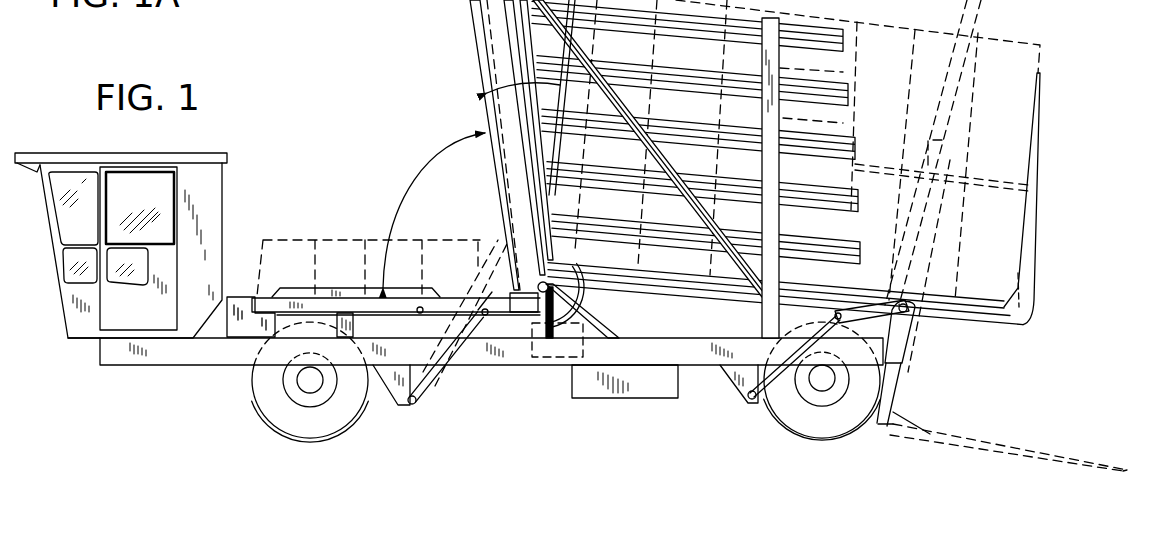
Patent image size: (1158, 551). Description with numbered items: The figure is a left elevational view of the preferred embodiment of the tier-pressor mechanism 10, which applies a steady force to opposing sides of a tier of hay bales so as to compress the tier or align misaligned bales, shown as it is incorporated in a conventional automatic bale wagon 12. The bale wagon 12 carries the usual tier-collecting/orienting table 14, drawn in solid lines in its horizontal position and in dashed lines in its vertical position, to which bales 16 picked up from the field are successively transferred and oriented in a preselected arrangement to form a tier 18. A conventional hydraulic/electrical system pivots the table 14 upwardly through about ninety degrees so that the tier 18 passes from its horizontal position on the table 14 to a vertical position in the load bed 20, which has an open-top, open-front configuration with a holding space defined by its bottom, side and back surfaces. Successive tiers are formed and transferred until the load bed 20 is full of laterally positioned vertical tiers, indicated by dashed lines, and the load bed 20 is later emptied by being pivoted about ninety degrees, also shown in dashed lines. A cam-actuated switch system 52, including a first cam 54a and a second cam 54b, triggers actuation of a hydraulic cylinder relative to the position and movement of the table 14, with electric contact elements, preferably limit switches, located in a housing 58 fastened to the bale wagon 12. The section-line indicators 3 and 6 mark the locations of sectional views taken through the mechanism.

The tier-pressor mechanism 10 is at (450, 50).
The automatic bale wagon 12 is at (234, 197).
The tier-collecting/orienting table 14 is at (253, 292).
The bales 16 is at (333, 240).
The tier 18 is at (298, 235).
The load bed 20 is at (1045, 161).
The cam-actuated switch system 52 is at (592, 308).
The first cam 54a is at (566, 330).
The second cam 54b is at (590, 293).
The housing 58 is at (530, 350).
The section line 3- 3 is at (505, 220).
The section line 6- 6 is at (478, 245).